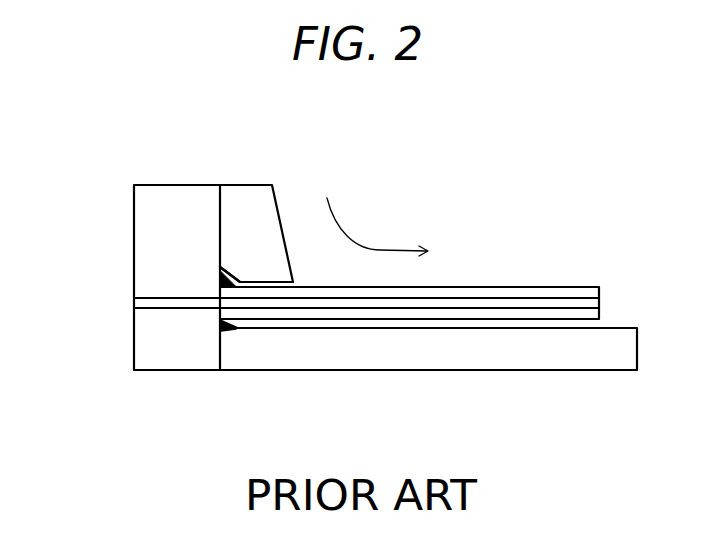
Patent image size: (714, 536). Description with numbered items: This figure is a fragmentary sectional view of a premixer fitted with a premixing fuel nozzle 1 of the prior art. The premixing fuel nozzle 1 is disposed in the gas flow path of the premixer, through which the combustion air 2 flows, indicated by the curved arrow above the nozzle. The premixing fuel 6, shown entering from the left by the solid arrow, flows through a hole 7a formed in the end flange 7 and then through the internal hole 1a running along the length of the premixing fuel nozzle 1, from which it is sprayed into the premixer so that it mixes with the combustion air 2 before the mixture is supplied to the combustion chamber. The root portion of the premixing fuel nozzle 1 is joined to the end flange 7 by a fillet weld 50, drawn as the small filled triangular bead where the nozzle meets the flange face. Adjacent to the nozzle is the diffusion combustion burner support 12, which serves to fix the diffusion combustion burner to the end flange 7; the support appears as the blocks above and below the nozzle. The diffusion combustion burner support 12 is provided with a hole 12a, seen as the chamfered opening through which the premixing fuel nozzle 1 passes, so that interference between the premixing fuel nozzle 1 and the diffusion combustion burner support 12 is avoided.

The premixing fuel nozzle 1 is at (502, 292).
The internal hole 1a is at (555, 305).
The combustion air 2 is at (380, 250).
The premixing fuel 6 is at (120, 303).
The end flange 7 is at (173, 360).
The hole 7a is at (147, 308).
The diffusion combustion burner support 12 is at (245, 200).
The hole 12a is at (268, 283).
The fillet weld 50 is at (221, 281).